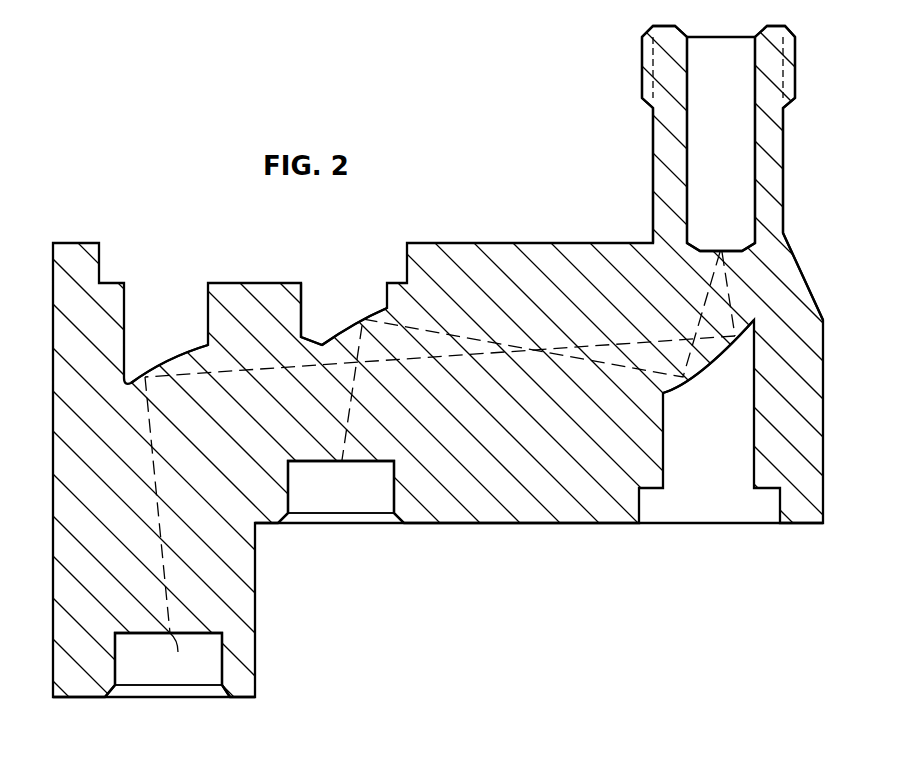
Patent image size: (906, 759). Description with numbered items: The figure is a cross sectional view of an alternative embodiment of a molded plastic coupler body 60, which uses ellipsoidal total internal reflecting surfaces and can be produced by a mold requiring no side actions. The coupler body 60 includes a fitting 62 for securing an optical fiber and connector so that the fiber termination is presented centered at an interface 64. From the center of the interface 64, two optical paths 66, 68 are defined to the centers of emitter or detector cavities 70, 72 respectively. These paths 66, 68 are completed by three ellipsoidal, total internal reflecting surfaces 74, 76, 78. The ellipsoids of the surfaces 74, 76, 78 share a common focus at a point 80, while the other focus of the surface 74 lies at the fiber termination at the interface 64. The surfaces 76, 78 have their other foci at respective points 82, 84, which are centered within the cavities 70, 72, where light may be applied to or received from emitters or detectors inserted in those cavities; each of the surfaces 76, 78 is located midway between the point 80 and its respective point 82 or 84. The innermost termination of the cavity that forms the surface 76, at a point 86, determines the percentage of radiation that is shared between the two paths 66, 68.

The coupler body 60 is at (505, 257).
The fitting 62 is at (662, 185).
The interface 64 is at (707, 243).
The optical path 66 is at (705, 290).
The optical path 68 is at (727, 289).
The emitter or detector cavity 70 is at (319, 500).
The emitter or detector cavity 72 is at (157, 688).
The total internal reflecting surface 74 is at (690, 376).
The total internal reflecting surface 76 is at (343, 333).
The total internal reflecting surface 78 is at (183, 350).
The point 80 is at (538, 346).
The point 82 is at (340, 462).
The point 84 is at (167, 665).
The point 86 is at (329, 312).